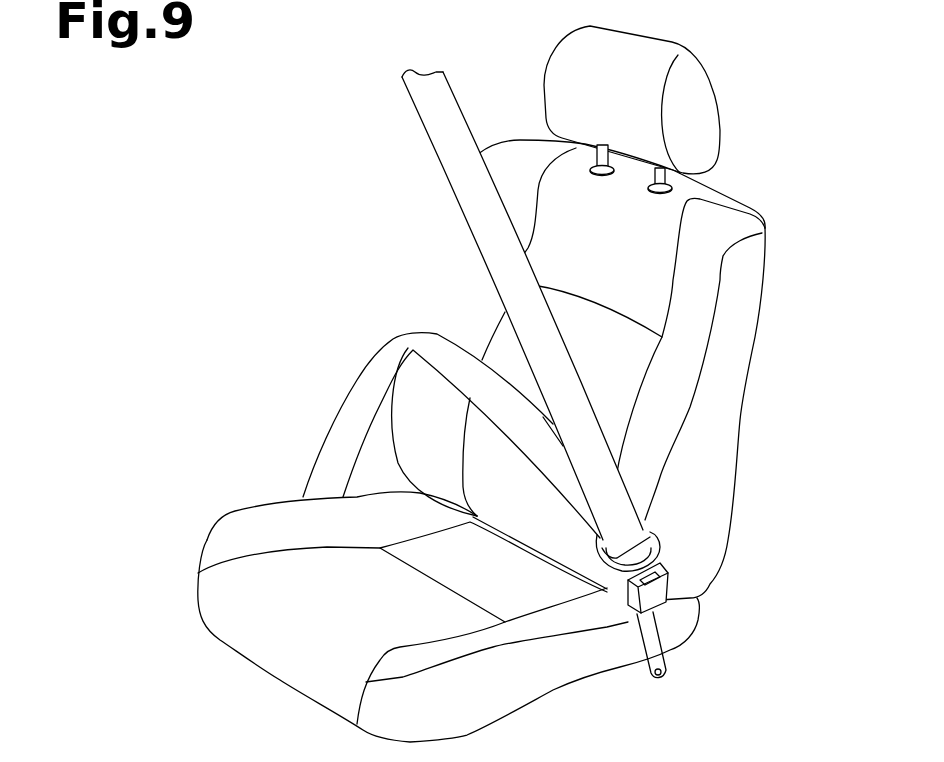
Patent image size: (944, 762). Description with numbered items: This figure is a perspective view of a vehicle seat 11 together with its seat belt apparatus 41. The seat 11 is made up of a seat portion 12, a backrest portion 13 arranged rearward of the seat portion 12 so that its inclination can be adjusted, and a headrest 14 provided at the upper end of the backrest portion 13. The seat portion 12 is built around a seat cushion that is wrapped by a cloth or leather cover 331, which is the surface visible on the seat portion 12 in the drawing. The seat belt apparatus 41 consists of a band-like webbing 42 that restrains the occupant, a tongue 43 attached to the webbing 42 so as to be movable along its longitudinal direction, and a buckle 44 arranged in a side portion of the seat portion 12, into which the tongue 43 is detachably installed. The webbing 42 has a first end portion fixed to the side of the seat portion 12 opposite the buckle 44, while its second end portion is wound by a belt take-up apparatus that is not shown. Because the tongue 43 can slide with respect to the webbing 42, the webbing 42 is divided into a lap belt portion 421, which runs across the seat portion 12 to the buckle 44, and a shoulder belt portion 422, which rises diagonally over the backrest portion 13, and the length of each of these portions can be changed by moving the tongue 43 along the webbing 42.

The seat 11 is at (733, 495).
The seat portion 12 is at (683, 632).
The backrest portion 13 is at (707, 568).
The headrest 14 is at (712, 120).
The cover 331 is at (232, 524).
The seat belt apparatus 41 is at (286, 408).
The webbing 42 is at (380, 223).
The lap belt portion 421 is at (404, 343).
The shoulder belt portion 422 is at (485, 240).
The tongue 43 is at (651, 538).
The buckle 44 is at (627, 613).